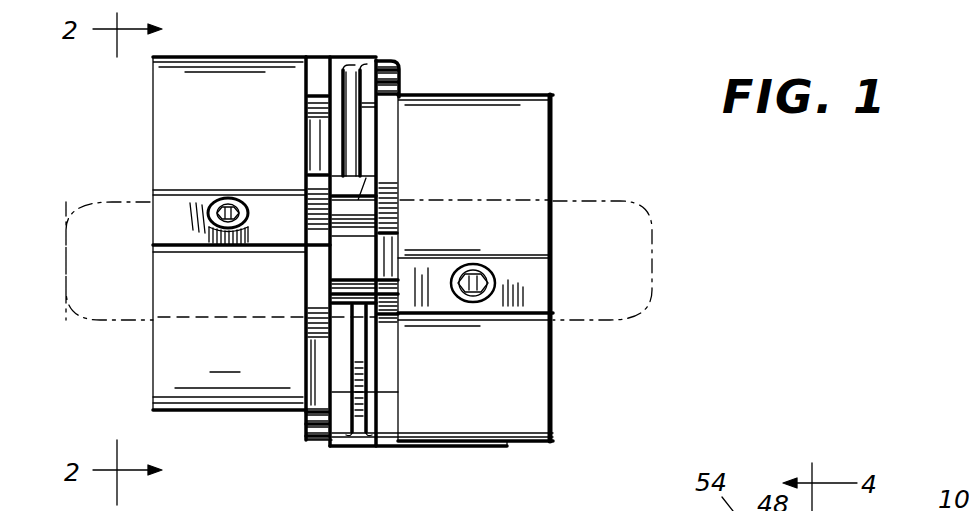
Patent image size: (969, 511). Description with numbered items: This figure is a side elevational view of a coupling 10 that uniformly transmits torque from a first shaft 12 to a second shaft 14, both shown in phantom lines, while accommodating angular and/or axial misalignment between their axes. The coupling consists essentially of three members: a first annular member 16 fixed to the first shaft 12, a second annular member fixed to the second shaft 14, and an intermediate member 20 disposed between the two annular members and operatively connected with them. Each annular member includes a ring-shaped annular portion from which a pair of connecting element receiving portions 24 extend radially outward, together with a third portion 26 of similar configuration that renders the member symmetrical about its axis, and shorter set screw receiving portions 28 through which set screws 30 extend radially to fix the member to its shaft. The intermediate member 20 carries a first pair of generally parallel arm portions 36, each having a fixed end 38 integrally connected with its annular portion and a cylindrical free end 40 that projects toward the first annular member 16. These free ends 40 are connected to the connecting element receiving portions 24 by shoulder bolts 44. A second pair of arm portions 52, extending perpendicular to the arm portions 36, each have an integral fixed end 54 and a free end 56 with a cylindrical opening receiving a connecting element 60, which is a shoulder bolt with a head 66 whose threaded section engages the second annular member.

The coupling 10 is at (404, 43).
The first shaft 12 is at (76, 338).
The second shaft 14 is at (575, 320).
The first annular member 16 is at (290, 18).
The intermediate member 20 is at (360, 450).
The connecting element receiving portions 24 is at (178, 84).
The third portion 26 is at (535, 128).
The set screw receiving portions 28 is at (173, 205).
The set screws 30 is at (240, 196).
The first pair of arm portions 36 is at (362, 140).
The fixed end 38 is at (368, 176).
The free end 40 is at (318, 75).
The shoulder bolts 44 is at (408, 320).
The second pair of arm portions 52 is at (215, 382).
The fixed end 54 is at (303, 316).
The free end 56 is at (378, 208).
The connecting elements 60 is at (316, 172).
The head 66 is at (306, 216).